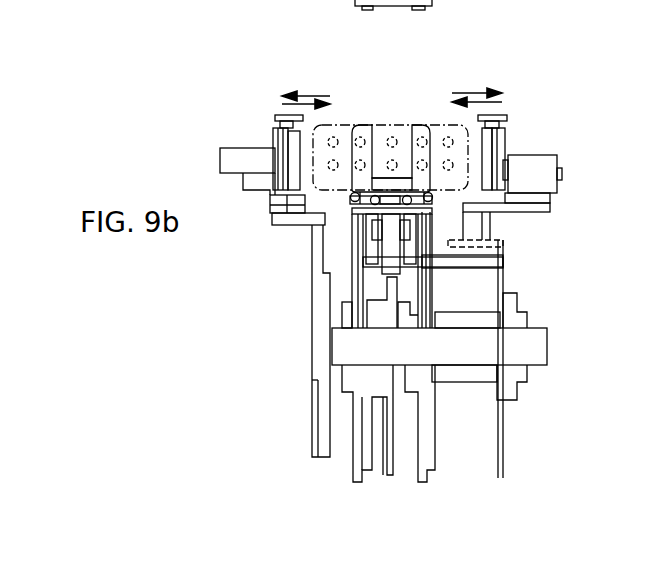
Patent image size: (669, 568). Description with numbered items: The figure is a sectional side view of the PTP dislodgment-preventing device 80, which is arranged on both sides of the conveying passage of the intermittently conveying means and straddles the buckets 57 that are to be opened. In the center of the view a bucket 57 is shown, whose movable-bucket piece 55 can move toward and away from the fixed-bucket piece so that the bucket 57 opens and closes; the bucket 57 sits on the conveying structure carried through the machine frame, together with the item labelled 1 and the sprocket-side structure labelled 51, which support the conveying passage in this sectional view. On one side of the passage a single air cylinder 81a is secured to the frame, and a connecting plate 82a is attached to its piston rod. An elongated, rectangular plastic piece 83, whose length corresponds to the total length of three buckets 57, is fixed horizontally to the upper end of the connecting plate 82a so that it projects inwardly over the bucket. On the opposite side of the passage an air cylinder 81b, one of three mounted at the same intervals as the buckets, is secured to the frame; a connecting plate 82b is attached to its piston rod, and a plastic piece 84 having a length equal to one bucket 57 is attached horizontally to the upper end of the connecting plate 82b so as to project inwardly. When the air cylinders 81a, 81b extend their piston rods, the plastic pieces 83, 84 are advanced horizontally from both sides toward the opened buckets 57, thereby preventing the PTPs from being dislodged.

The carrier 1 is at (339, 125).
The frame 51 is at (392, 451).
The movable-bucket piece 55 is at (420, 125).
The bucket 57 is at (358, 118).
The PTP dislodgment-preventing device 80 is at (456, 82).
The air cylinder 81a is at (525, 160).
The air cylinder 81b is at (230, 150).
The connecting plate 82a is at (500, 135).
The connecting plate 82b is at (268, 130).
The plastic piece 83 is at (503, 113).
The plastic piece 84 is at (277, 115).